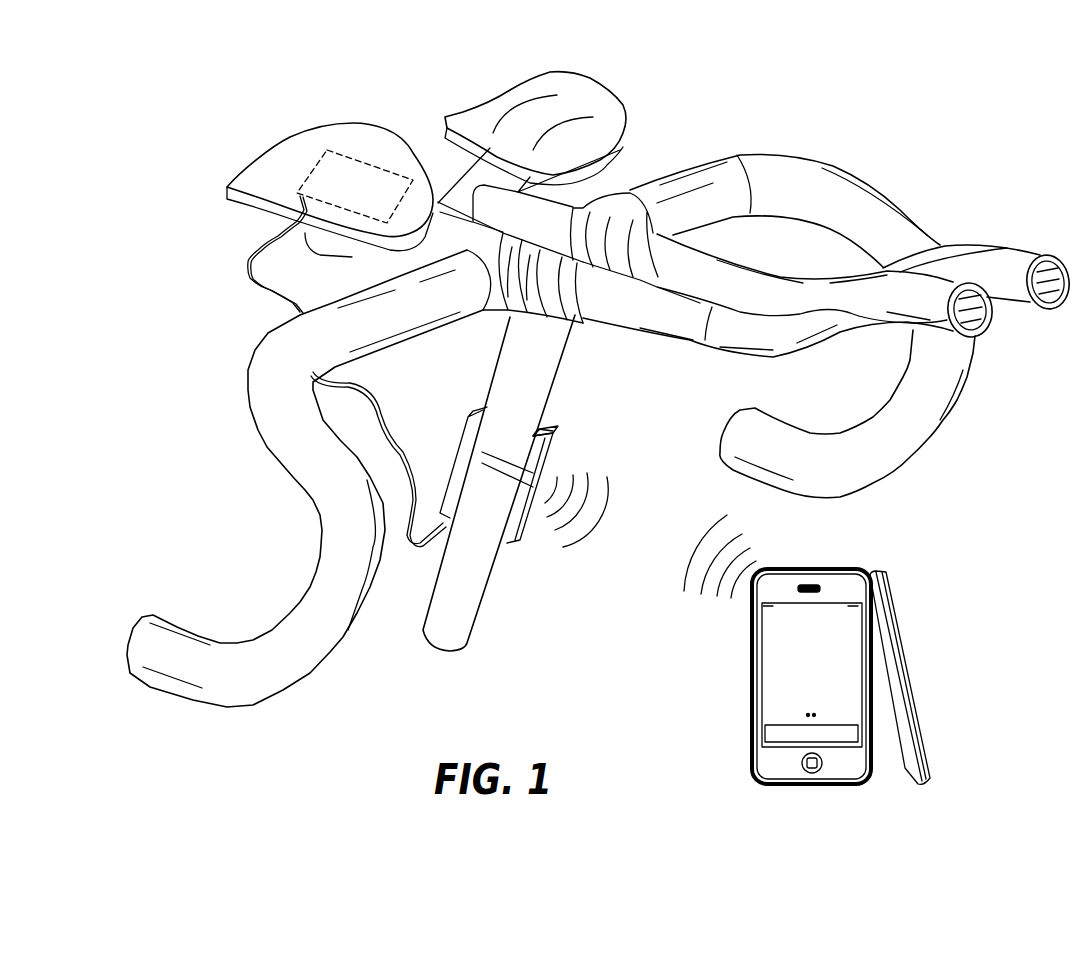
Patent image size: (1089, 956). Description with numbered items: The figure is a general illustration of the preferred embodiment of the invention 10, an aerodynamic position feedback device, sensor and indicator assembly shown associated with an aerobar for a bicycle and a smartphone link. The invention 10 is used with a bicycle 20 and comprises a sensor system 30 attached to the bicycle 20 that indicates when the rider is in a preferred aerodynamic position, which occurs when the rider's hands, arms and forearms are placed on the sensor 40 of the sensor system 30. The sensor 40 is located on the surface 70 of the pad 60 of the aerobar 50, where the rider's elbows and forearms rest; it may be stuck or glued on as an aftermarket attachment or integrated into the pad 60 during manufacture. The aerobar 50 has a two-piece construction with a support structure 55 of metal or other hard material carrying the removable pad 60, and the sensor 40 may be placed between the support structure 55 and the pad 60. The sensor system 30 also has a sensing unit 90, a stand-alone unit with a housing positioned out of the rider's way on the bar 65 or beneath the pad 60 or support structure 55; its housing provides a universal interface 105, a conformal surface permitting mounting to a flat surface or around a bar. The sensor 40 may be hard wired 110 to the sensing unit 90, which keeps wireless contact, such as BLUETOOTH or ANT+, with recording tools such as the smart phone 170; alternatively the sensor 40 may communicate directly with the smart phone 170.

The invention 10 is at (981, 166).
The bicycle 20 is at (475, 625).
The sensor system 30 is at (507, 547).
The sensor 40 is at (333, 163).
The aerobar 50 is at (460, 181).
The support structure 55 is at (250, 217).
The pad 60 is at (583, 90).
The bar 65 is at (430, 632).
The surface 70 is at (367, 140).
The sensing unit 90 is at (547, 424).
The universal interface 105 is at (503, 472).
The hard wire 110 is at (418, 405).
The smart phone 170 is at (838, 770).